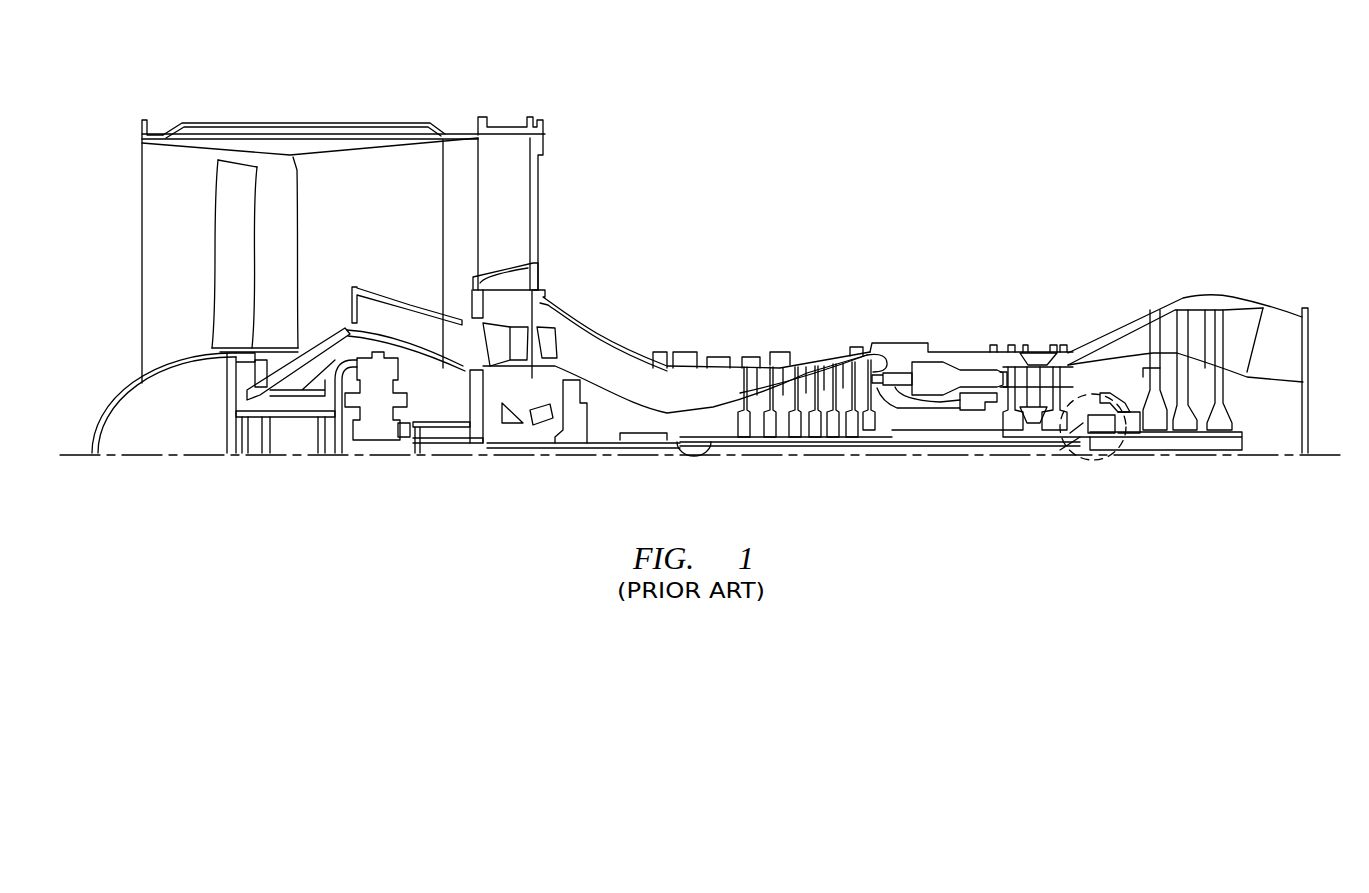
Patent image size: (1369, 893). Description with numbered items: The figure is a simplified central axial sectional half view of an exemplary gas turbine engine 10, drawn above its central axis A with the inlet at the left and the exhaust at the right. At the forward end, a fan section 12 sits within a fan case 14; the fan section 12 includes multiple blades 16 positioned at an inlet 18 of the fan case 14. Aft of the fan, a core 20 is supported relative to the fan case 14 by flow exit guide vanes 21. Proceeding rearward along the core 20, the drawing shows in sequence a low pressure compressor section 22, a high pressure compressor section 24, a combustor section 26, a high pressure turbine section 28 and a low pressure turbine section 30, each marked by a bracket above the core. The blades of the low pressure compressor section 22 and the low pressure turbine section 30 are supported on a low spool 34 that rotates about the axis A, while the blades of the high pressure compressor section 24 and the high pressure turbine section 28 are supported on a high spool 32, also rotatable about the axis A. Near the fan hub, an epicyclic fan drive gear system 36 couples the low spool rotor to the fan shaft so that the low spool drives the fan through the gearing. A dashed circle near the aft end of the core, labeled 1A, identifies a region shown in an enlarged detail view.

The gas turbine engine 10 is at (893, 160).
The fan section 12 is at (330, 88).
The fan case 14 is at (345, 130).
The fan blade 16 is at (230, 272).
The inlet 18 is at (126, 295).
The core 20 is at (1240, 303).
The flow exit guide vanes 21 is at (520, 213).
The low pressure compressor section 22 is at (600, 88).
The high pressure compressor section 24 is at (888, 310).
The combustor section 26 is at (992, 310).
The high pressure turbine section 28 is at (1067, 310).
The low pressure turbine section 30 is at (1235, 228).
The high spool 32 is at (907, 430).
The low spool 34 is at (1117, 447).
The epicyclic fan drive gear system 36 is at (371, 463).
The detail view region 1A is at (1090, 467).
The axis A is at (1345, 462).